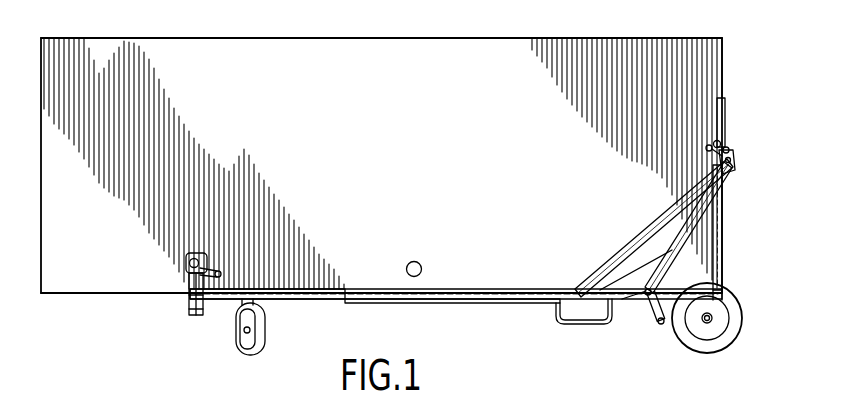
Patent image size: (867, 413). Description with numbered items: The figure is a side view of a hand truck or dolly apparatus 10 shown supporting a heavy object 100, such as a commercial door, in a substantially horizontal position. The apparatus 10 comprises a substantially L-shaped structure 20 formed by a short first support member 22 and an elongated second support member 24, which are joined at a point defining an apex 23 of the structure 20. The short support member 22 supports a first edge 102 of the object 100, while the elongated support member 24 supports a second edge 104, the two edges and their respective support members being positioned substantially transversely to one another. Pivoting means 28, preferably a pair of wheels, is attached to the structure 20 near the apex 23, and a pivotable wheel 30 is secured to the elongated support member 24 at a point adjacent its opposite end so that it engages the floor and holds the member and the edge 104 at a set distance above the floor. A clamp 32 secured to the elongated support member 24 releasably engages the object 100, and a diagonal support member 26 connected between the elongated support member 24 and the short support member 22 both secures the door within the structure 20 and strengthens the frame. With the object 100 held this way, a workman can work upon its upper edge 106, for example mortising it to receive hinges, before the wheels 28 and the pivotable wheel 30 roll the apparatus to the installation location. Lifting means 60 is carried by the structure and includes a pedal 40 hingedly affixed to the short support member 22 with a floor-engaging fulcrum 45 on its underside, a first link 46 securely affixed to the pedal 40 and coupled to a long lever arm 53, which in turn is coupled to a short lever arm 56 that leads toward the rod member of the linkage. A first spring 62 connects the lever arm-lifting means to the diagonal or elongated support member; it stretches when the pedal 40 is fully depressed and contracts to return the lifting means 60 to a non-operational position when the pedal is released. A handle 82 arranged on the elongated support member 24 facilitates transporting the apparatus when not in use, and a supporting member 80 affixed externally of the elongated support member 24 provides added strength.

The hand truck apparatus 10 is at (742, 118).
The structure 20 is at (490, 289).
The first support member 22 is at (723, 220).
The apex 23 is at (730, 315).
The second support member 24 is at (307, 300).
The diagonal support member 26 is at (618, 254).
The pivoting means 28 is at (732, 334).
The pivotable wheel 30 is at (234, 337).
The clamp 32 is at (197, 250).
The pedal 40 is at (690, 178).
The floor-engaging fulcrum 45 is at (708, 146).
The first link 46 is at (733, 150).
The long lever arm 53 is at (667, 250).
The short lever arm 56 is at (655, 318).
The lifting means 60 is at (692, 248).
The first spring 62 is at (628, 300).
The supporting member 80 is at (457, 305).
The handle 82 is at (557, 324).
The object 100 is at (377, 90).
The first edge 102 is at (723, 53).
The second edge 104 is at (103, 296).
The upper edge 106 is at (132, 37).